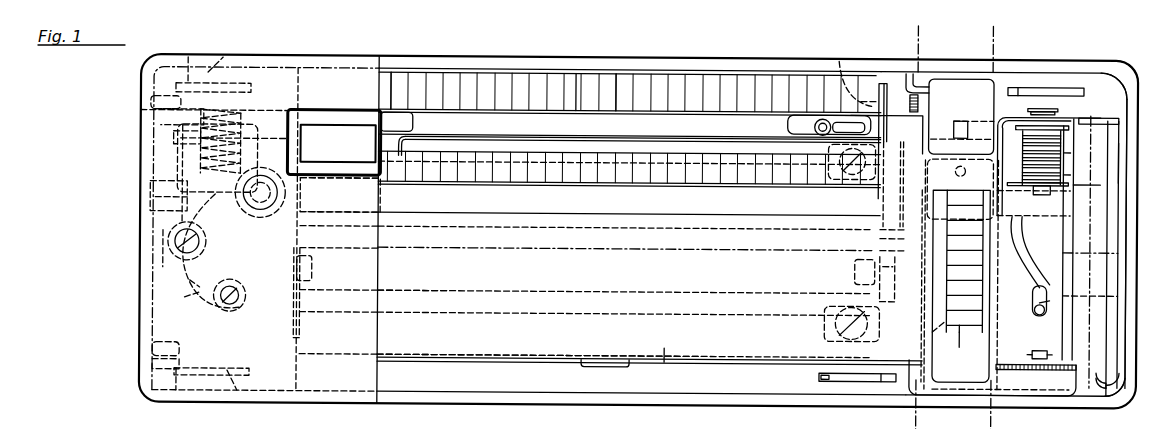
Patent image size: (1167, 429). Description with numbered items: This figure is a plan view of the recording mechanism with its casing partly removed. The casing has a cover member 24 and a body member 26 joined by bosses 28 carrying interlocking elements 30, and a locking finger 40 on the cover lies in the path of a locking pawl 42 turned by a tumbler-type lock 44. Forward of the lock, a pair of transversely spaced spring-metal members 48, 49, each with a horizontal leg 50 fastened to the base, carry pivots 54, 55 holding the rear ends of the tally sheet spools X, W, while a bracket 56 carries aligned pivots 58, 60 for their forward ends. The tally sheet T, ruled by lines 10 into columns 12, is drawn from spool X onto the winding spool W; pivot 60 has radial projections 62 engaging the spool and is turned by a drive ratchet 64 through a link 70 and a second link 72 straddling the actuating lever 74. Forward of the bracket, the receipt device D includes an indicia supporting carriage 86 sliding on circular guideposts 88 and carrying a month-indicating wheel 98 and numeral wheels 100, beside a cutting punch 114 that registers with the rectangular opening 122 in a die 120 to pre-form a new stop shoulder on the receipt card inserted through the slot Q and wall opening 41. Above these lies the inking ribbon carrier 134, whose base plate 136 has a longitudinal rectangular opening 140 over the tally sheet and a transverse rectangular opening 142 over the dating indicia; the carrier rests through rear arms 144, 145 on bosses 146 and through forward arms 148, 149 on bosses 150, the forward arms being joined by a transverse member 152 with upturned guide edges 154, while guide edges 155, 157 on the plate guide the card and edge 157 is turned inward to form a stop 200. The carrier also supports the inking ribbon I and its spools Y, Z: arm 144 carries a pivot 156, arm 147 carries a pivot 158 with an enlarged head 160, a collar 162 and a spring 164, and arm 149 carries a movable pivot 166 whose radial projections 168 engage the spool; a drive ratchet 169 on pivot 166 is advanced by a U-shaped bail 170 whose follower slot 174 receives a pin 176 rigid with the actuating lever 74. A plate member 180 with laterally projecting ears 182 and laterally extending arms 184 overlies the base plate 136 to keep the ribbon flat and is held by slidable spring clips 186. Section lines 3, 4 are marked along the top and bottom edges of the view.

The section line 3 is at (979, 26).
The section line 4 is at (917, 24).
The lines 10 is at (576, 75).
The columns 12 is at (618, 78).
The cover member 24 is at (160, 254).
The body member 26 is at (510, 405).
The bosses 28 is at (1045, 53).
The interlocking element 30 is at (187, 60).
The locking finger 40 is at (177, 165).
The wall opening 41 is at (1122, 132).
The locking pawl 42 is at (160, 228).
The tumbler-type lock 44 is at (247, 216).
The spool-supporting member 48 is at (303, 334).
The spool-supporting member 49 is at (290, 112).
The horizontal leg 50 is at (185, 300).
The spool-holding pivot 54 is at (318, 267).
The pivot 55 is at (313, 112).
The bracket 56 is at (828, 336).
The pivot 58 is at (855, 268).
The pivot 60 is at (835, 72).
The radial projections 62 is at (868, 75).
The drive ratchet 64 is at (912, 90).
The link 70 is at (880, 237).
The second link 72 is at (880, 285).
The actuating lever 74 is at (1070, 262).
The indicia supporting carriage 86 is at (925, 352).
The circular guideposts 88 is at (955, 375).
The month-indicating wheel 98 is at (985, 284).
The numeral wheels 100 is at (983, 326).
The cutting punch 114 is at (962, 124).
The die 120 is at (935, 78).
The rectangular opening 122 is at (956, 124).
The carrier 134 is at (542, 364).
The base plate 136 is at (462, 364).
The longitudinally extending rectangular opening 140 is at (685, 152).
The transverse rectangular opening 142 is at (1048, 238).
The arm 144 is at (160, 366).
The arm 145 is at (160, 124).
The bosses 146 is at (160, 346).
The arm 147 is at (150, 104).
The arm 148 is at (1112, 78).
The arm 149 is at (1112, 397).
The bosses 150 is at (1132, 76).
The transversely arranged member 152 is at (1078, 206).
The upturned guide edges 154 is at (1090, 121).
The upturned guide edge 155 is at (440, 357).
The pivot 156 is at (222, 311).
The upturned guide edge 157 is at (535, 138).
The pivot 158 is at (160, 203).
The enlarged head 160 is at (218, 112).
The collar 162 is at (165, 186).
The spring 164 is at (173, 142).
The movable pivot 166 is at (1048, 350).
The radial projections 168 is at (1053, 352).
The drive ratchet 169 is at (1018, 362).
The U-shaped bail 170 is at (1068, 214).
The follower slot 174 is at (1032, 250).
The pin 176 is at (1050, 300).
The plate member 180 is at (665, 362).
The laterally projecting ears 182 is at (608, 367).
The laterally extending arms 184 is at (312, 195).
The spring clips 186 is at (398, 120).
The stop 200 is at (418, 138).
The tally sheet T is at (641, 102).
The winding spool W is at (397, 80).
The inking ribbon I is at (729, 200).
The spool X is at (431, 292).
The inking ribbon spool Y is at (180, 284).
The inking ribbon spool Z is at (1083, 243).
The receipt device D is at (969, 330).
The slot Q is at (1127, 165).